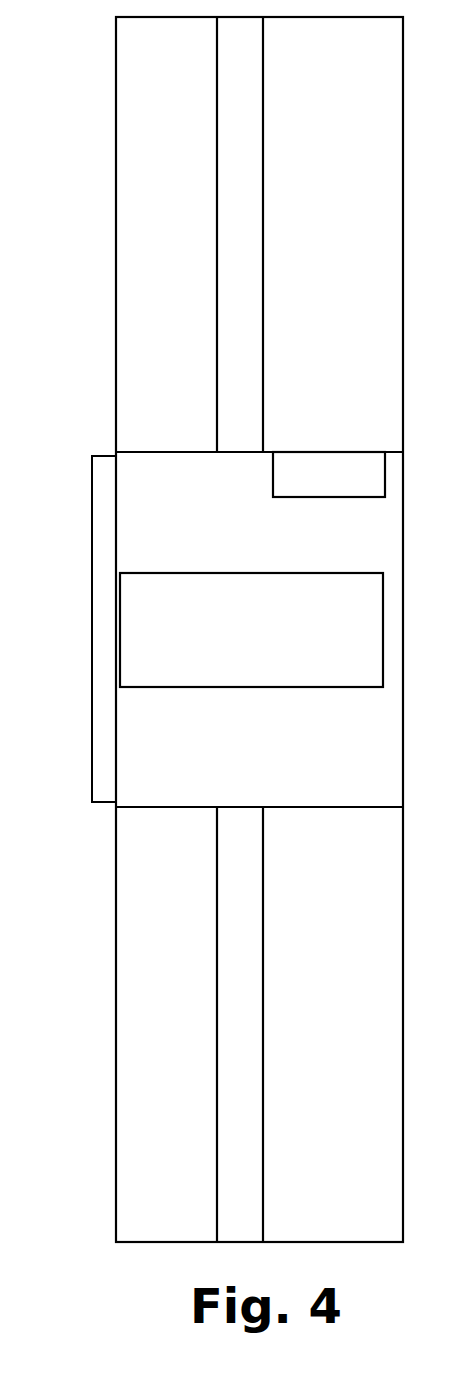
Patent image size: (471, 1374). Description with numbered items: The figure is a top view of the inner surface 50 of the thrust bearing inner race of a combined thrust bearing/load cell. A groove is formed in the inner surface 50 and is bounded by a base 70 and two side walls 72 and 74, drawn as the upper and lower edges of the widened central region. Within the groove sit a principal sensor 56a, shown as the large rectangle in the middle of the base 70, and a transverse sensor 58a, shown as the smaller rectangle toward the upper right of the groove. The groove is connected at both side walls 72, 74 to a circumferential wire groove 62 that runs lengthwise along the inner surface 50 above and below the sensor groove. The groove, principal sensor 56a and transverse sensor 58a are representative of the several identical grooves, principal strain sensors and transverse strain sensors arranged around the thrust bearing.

The inner surface 50 is at (347, 937).
The circumferential wire groove 62 is at (227, 251).
The base 70 is at (192, 517).
The side wall 72 is at (172, 452).
The side wall 74 is at (162, 807).
The transverse sensor 58a is at (310, 486).
The principal sensor 56a is at (218, 646).